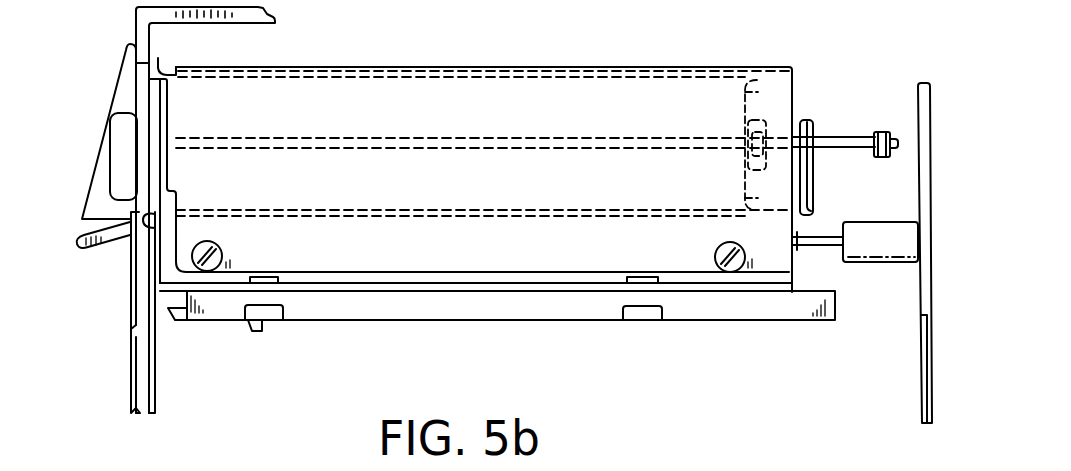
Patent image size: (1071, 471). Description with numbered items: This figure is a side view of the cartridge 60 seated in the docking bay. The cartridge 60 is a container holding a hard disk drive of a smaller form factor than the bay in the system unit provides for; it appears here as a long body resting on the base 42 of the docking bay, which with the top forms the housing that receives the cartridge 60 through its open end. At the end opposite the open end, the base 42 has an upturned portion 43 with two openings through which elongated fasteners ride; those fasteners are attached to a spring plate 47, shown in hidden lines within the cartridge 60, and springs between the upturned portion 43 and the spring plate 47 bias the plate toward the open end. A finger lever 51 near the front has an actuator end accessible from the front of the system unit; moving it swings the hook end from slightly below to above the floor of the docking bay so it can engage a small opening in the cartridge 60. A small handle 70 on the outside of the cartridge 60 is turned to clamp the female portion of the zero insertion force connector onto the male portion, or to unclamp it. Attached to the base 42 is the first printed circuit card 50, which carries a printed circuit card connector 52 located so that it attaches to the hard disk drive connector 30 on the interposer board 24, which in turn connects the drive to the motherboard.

The interposer board 24 is at (920, 372).
The connector 30 is at (908, 253).
The base 42 is at (733, 278).
The upturned portion 43 is at (815, 176).
The spring plate 47 is at (764, 112).
The first printed circuit card 50 is at (827, 236).
The finger lever 51 is at (104, 247).
The printed circuit card connector 52 is at (846, 248).
The cartridge 60 is at (436, 105).
The handle 70 is at (121, 165).